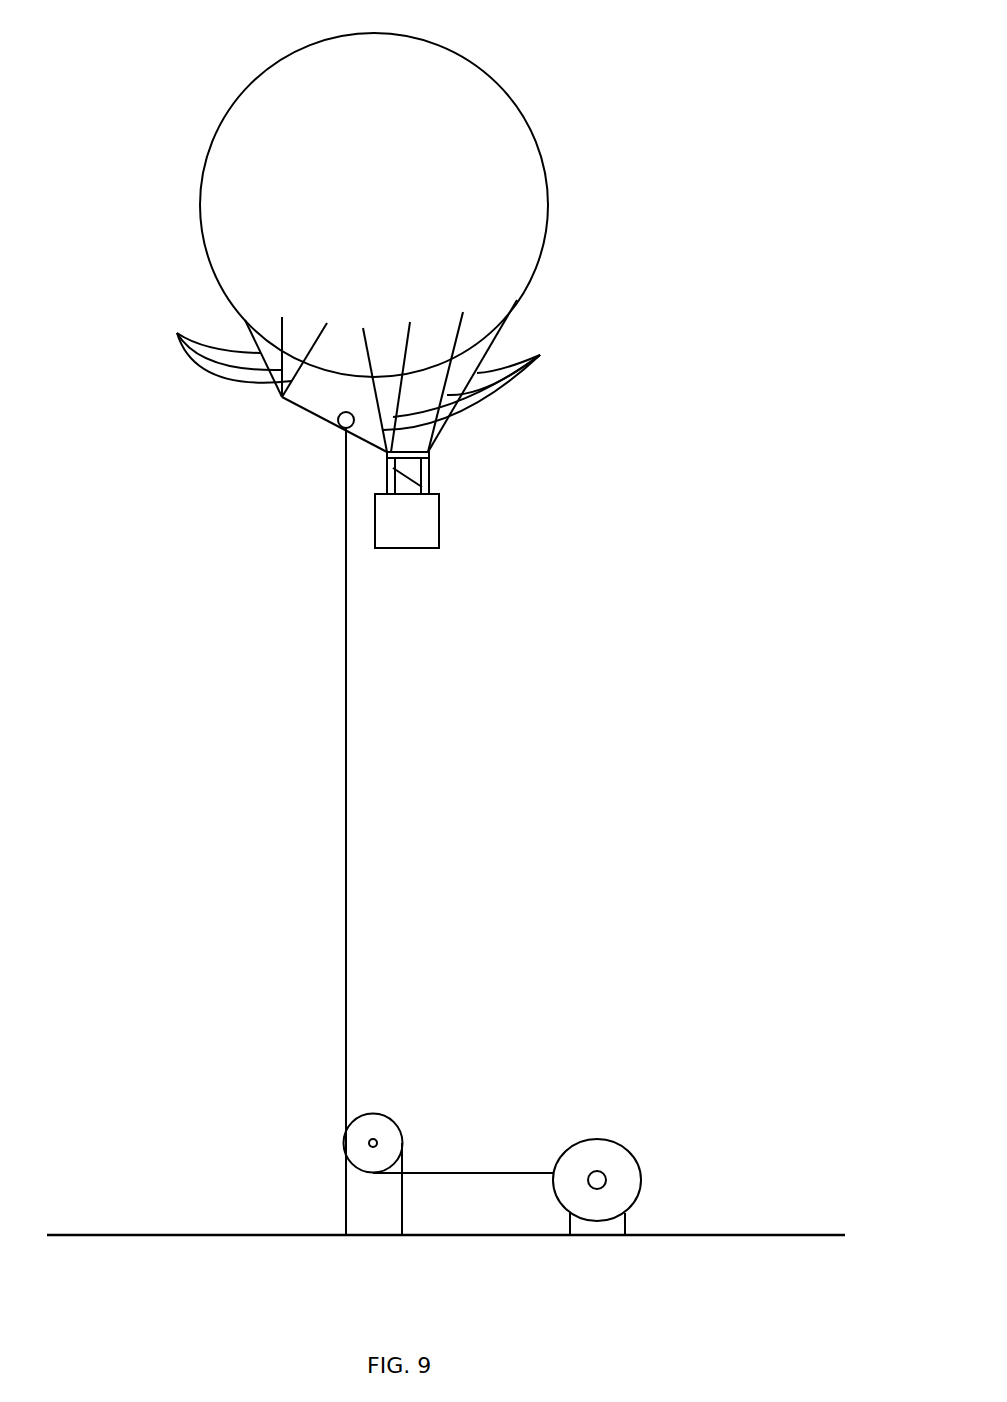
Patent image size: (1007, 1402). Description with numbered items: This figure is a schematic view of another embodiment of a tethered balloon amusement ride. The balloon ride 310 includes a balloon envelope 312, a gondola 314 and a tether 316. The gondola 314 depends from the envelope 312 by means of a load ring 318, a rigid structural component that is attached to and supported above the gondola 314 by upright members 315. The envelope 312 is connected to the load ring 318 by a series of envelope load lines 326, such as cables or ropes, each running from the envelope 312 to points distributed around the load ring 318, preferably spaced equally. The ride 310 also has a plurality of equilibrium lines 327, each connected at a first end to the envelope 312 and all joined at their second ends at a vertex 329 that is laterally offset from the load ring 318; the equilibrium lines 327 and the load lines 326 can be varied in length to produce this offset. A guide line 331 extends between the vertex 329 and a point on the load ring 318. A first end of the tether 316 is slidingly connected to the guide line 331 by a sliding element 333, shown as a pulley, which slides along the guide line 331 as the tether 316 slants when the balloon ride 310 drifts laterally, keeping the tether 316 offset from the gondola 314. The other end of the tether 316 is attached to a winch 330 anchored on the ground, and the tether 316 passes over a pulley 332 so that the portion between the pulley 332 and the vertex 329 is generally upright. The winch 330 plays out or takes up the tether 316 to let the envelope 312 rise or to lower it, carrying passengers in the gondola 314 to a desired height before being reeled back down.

The balloon ride 310 is at (692, 282).
The balloon envelope 312 is at (497, 78).
The gondola 314 is at (440, 538).
The upright members 315 is at (430, 492).
The tether 316 is at (345, 908).
The load ring 318 is at (429, 457).
The envelope load lines 326 is at (476, 376).
The equilibrium lines 327 is at (219, 342).
The vertex 329 is at (282, 398).
The guide line 331 is at (303, 409).
The pulley 332 is at (375, 1113).
The sliding element 333 is at (342, 430).
The winch 330 is at (597, 1140).